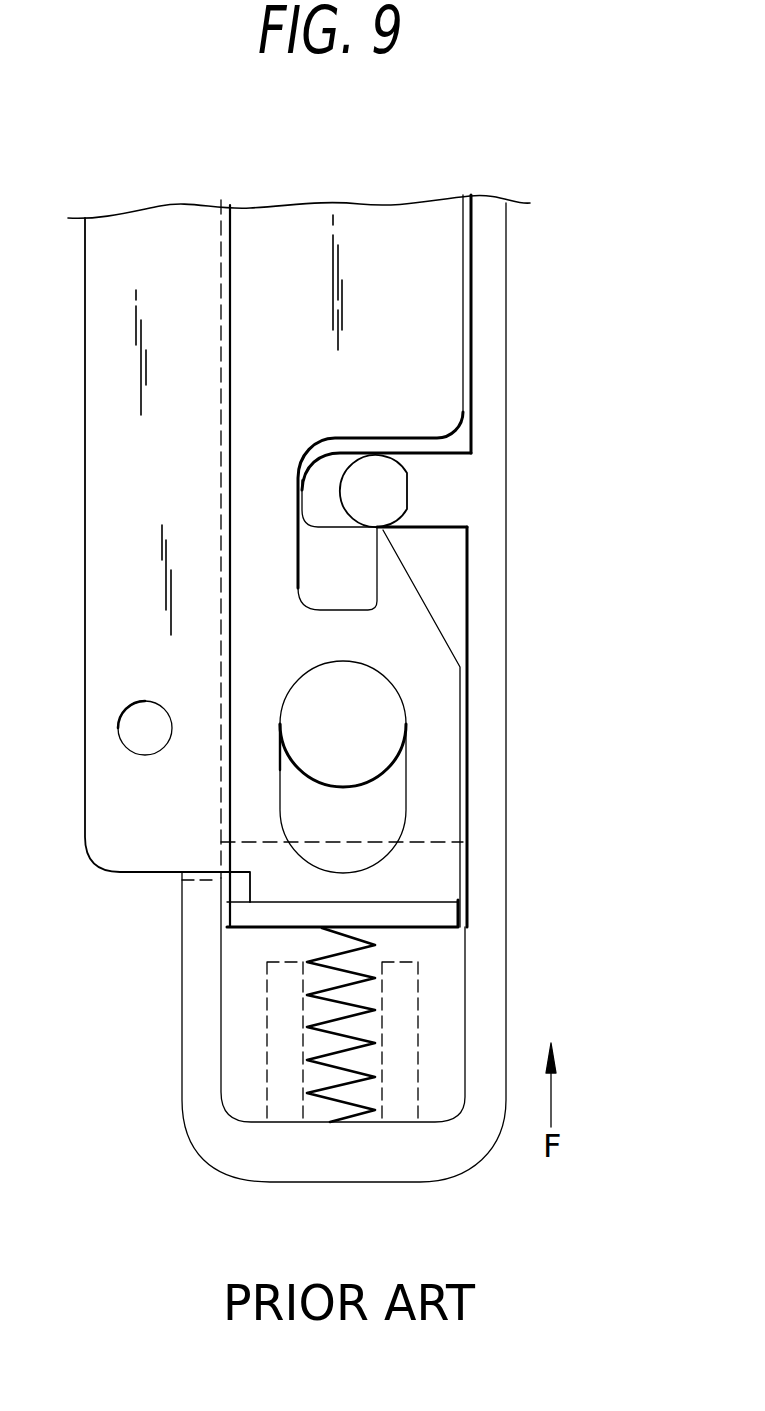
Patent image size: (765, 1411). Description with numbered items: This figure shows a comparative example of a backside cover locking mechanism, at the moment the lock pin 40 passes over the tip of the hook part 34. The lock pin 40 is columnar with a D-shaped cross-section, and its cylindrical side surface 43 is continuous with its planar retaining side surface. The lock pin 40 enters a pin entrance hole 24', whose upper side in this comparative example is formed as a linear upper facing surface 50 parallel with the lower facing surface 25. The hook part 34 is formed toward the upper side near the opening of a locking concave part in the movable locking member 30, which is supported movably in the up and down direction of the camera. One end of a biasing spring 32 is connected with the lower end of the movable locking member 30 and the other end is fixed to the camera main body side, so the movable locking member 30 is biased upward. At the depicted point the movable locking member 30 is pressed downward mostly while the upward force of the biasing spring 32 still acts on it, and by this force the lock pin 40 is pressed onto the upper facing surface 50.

The movable locking member 30 is at (447, 391).
The upper facing surface 50 is at (443, 458).
The pin entrance hole 24' is at (463, 497).
The lower facing surface 25 is at (425, 528).
The hook part 34 is at (423, 718).
The lock pin 40 is at (380, 472).
The cylindrical side surface 43 is at (345, 456).
The biasing spring 32 is at (372, 945).